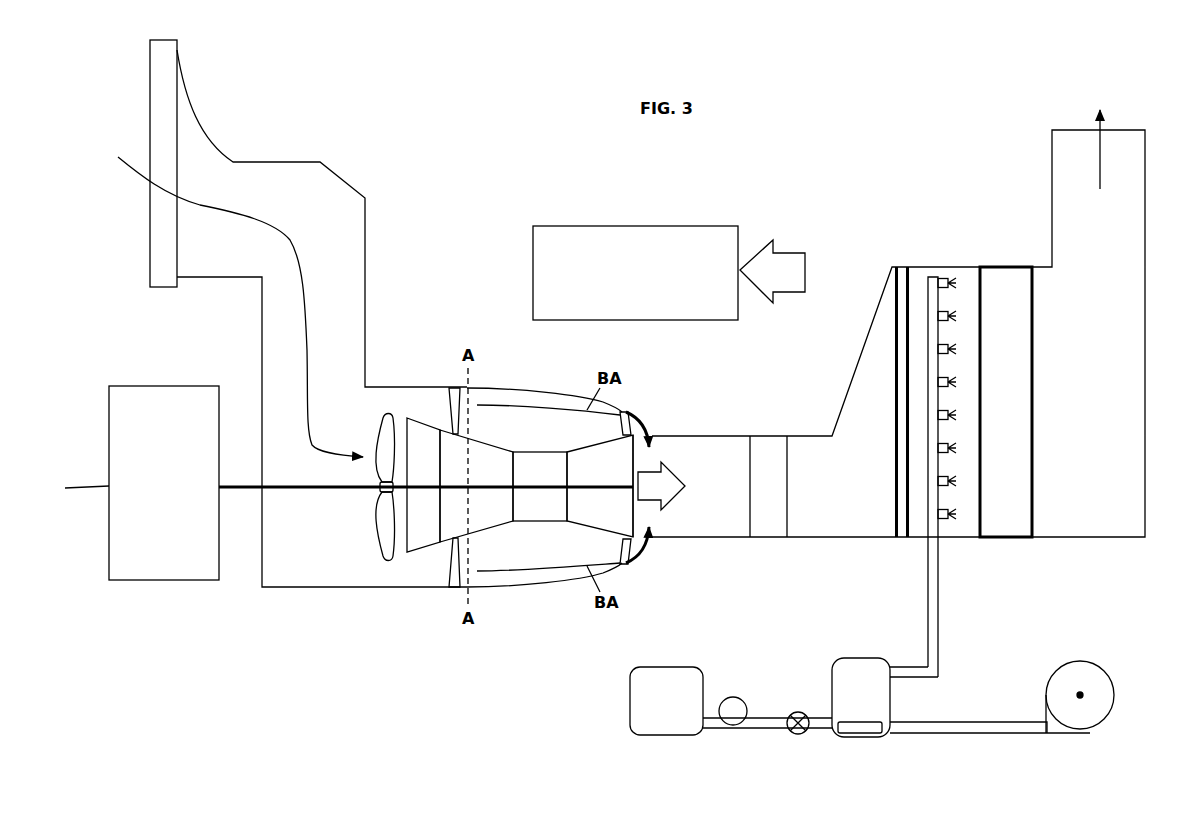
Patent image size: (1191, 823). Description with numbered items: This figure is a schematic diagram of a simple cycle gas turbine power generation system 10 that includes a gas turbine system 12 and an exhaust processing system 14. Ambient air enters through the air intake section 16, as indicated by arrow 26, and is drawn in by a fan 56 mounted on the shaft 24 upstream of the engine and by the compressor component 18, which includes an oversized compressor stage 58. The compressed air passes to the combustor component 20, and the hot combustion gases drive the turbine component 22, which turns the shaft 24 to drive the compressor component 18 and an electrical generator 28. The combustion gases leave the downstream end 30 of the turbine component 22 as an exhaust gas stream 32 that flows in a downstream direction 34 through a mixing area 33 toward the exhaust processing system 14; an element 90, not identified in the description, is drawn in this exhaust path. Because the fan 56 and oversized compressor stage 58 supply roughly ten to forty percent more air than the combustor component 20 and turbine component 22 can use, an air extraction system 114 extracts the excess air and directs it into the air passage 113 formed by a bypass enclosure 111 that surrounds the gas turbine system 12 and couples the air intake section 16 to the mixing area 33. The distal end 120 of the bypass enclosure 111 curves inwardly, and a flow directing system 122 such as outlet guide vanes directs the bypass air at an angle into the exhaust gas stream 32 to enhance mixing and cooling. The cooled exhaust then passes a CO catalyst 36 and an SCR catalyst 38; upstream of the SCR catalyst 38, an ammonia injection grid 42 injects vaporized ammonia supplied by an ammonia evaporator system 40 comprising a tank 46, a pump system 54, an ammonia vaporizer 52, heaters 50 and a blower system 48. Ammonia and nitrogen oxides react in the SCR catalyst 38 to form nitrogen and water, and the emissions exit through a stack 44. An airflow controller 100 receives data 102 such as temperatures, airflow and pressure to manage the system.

The gas turbine power generation system 10 is at (525, 148).
The gas turbine system 12 is at (520, 530).
The exhaust processing system 14 is at (925, 172).
The air intake section 16 is at (257, 333).
The compressor component 18 is at (476, 486).
The combustor component 20 is at (540, 486).
The turbine component 22 is at (600, 486).
The shaft 24 is at (307, 492).
The intake air arrow 26 is at (293, 247).
The electrical generator 28 is at (128, 483).
The downstream end 30 is at (630, 505).
The exhaust gas stream 32 is at (661, 486).
The mixing area 33 is at (898, 333).
The downstream direction 34 is at (817, 556).
The CO catalyst 36 is at (896, 515).
The SCR catalyst 38 is at (1034, 463).
The ammonia evaporator system 40 is at (787, 781).
The ammonia injection grid 42 is at (932, 292).
The stack 44 is at (1101, 165).
The tank 46 is at (628, 705).
The blower system 48 is at (1092, 731).
The heaters 50 is at (866, 733).
The ammonia vaporizer 52 is at (848, 663).
The pump system 54 is at (725, 697).
The fan 56 is at (380, 518).
The oversized compressor stage 58 is at (423, 485).
The sensor section 90 is at (768, 486).
The airflow controller 100 is at (635, 273).
The data 102 is at (790, 253).
The bypass enclosure 111 is at (490, 388).
The air passage 113 is at (548, 488).
The air extraction system 114 is at (449, 410).
The distal end 120 is at (652, 424).
The flow directing system 122 is at (630, 416).